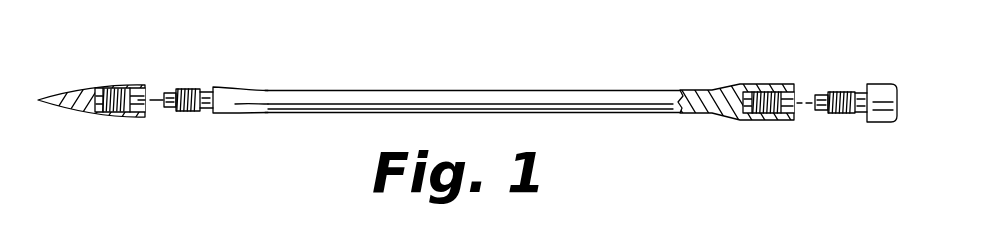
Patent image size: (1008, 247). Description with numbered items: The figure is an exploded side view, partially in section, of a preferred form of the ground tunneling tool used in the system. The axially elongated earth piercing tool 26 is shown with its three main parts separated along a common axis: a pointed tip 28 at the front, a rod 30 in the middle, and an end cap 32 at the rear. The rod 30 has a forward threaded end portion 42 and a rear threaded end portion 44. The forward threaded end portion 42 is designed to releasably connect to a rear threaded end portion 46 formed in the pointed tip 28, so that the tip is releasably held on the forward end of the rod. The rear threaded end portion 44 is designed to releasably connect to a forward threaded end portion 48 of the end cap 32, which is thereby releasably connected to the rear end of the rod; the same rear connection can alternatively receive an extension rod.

The earth piercing tool 26 is at (515, 70).
The pointed tip 28 is at (105, 73).
The rod 30 is at (292, 80).
The end cap 32 is at (875, 74).
The forward threaded end portion 42 is at (193, 125).
The rear threaded end portion 44 is at (762, 76).
The rear threaded end portion 46 is at (127, 76).
The forward threaded end portion 48 is at (847, 126).